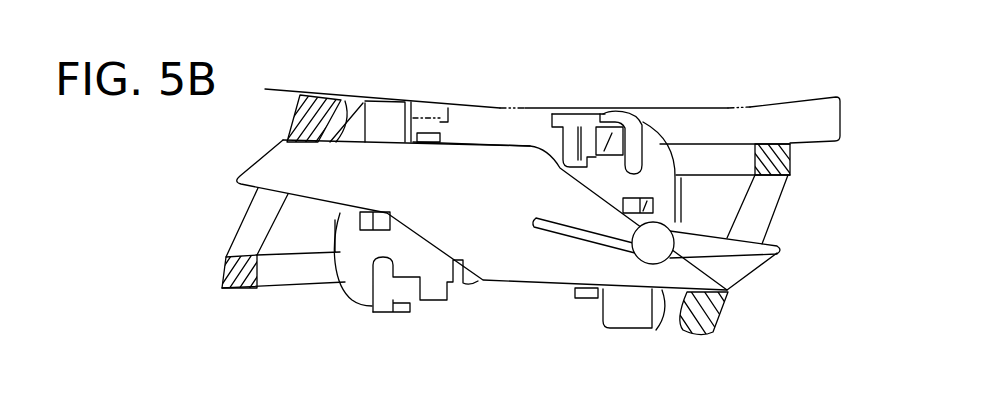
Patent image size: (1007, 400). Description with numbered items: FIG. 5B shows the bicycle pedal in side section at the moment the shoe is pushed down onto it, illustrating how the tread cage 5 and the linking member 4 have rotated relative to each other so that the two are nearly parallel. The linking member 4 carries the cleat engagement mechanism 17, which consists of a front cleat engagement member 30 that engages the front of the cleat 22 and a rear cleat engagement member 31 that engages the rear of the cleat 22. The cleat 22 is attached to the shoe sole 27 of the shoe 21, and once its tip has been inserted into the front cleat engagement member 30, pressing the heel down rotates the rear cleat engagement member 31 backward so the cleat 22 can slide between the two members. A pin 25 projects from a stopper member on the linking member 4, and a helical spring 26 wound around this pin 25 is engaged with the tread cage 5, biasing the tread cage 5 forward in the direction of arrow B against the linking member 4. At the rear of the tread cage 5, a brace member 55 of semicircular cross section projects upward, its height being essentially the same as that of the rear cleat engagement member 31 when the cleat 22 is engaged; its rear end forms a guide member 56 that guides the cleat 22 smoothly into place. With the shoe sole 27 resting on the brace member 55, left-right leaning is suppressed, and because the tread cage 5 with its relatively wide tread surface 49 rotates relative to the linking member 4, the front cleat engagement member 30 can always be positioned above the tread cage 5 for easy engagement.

The linking member 4 is at (503, 96).
The tread cage 5 is at (737, 311).
The cleat engagement mechanism 17 is at (541, 80).
The shoe 21 is at (826, 96).
The cleat 22 is at (443, 108).
The pin 25 is at (667, 245).
The helical spring 26 is at (577, 245).
The shoe sole 27 is at (815, 140).
The front cleat engagement member 30 is at (627, 107).
The rear cleat engagement member 31 is at (398, 99).
The tread surface 49 is at (766, 140).
The brace member 55 is at (316, 97).
The guide member 56 is at (290, 99).
The arrow B is at (345, 86).